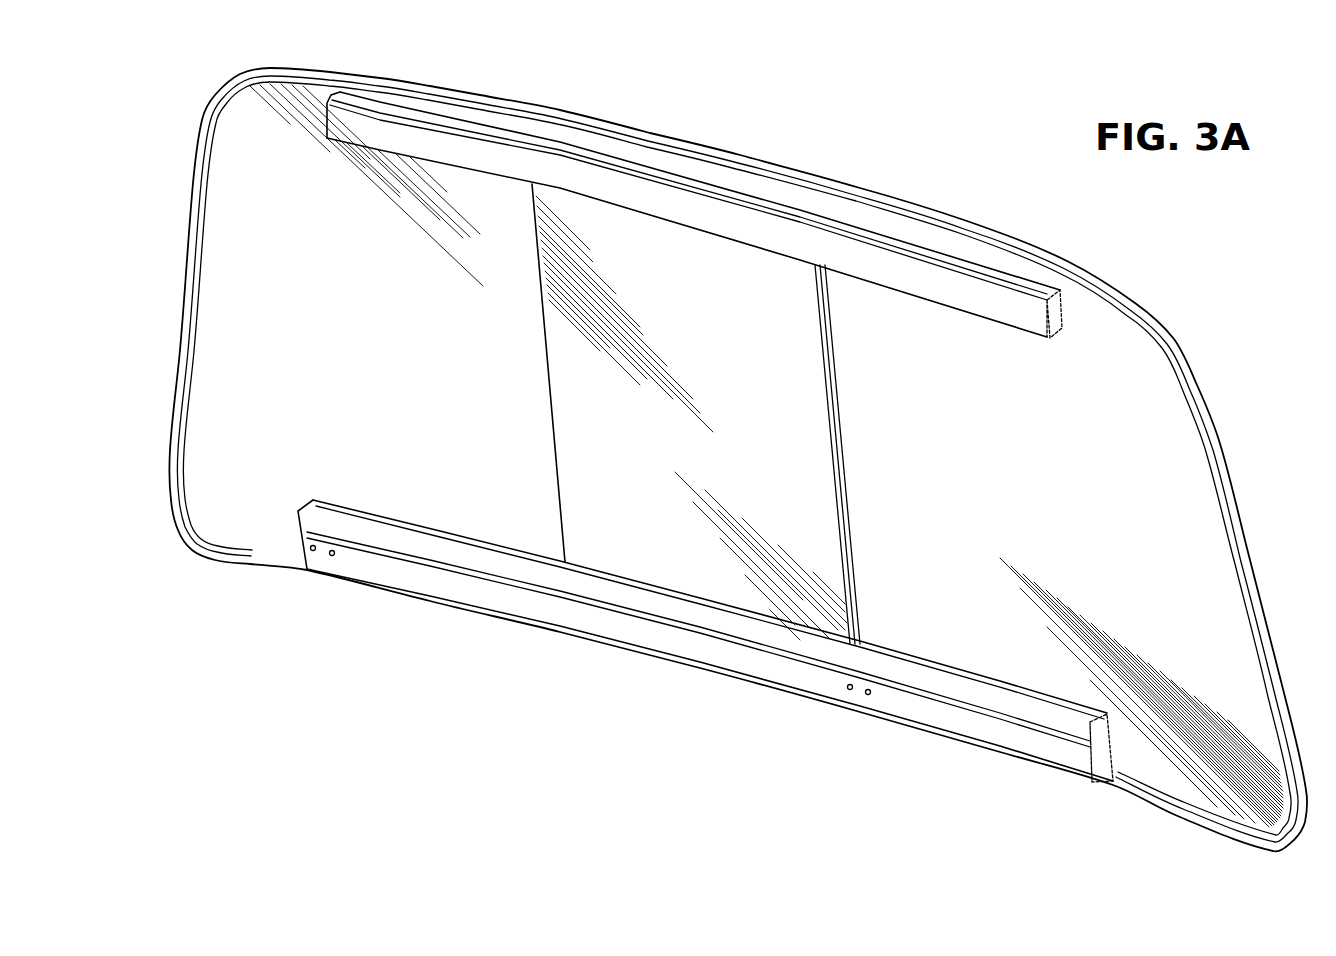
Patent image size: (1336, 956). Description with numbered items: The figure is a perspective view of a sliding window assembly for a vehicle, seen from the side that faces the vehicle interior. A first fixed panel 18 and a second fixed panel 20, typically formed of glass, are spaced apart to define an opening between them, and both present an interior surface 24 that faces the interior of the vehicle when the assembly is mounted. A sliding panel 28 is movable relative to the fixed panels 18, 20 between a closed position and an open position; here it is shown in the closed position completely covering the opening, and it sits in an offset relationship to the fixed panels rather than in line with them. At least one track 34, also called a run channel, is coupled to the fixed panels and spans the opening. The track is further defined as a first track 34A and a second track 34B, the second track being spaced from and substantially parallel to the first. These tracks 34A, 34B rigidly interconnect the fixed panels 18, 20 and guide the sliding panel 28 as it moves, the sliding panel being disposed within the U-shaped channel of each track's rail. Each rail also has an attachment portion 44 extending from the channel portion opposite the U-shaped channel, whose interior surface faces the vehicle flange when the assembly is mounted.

The first fixed panel 18 is at (1131, 404).
The second fixed panel 20 is at (242, 157).
The interior surface 24 is at (376, 334).
The sliding panel 28 is at (630, 546).
The track 34 is at (730, 460).
The first track 34A is at (885, 700).
The second track 34B is at (694, 215).
The attachment portion 44 is at (991, 263).